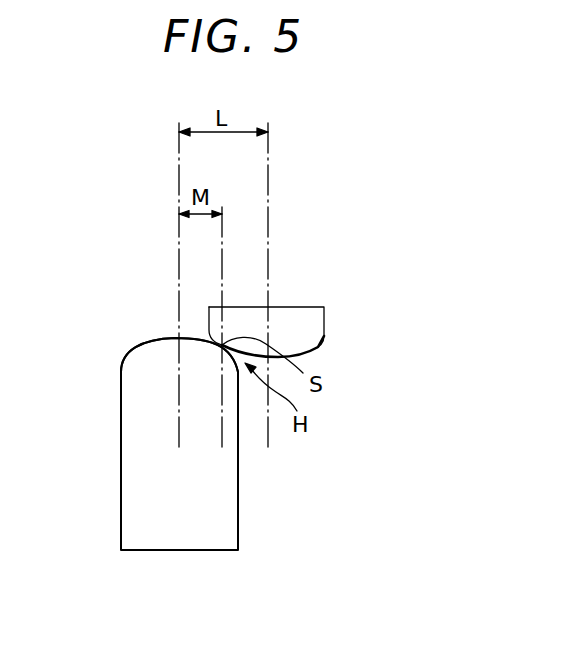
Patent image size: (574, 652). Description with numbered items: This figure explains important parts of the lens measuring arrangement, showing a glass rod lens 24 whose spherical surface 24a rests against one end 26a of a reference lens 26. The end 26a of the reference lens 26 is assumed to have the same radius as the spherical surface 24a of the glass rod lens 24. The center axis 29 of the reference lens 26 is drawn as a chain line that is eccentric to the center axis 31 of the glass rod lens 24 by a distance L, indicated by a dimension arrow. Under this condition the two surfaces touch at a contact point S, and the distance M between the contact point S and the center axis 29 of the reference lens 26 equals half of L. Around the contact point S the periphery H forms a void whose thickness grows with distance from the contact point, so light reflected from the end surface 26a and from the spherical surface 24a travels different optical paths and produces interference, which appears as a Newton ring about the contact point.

The glass rod lens 24 is at (300, 321).
The spherical surface 24a is at (322, 340).
The reference lens 26 is at (159, 423).
The end of reference lens 26a is at (142, 340).
The center axis of reference lens 29 is at (177, 252).
The center axis of glass rod lens 31 is at (271, 185).